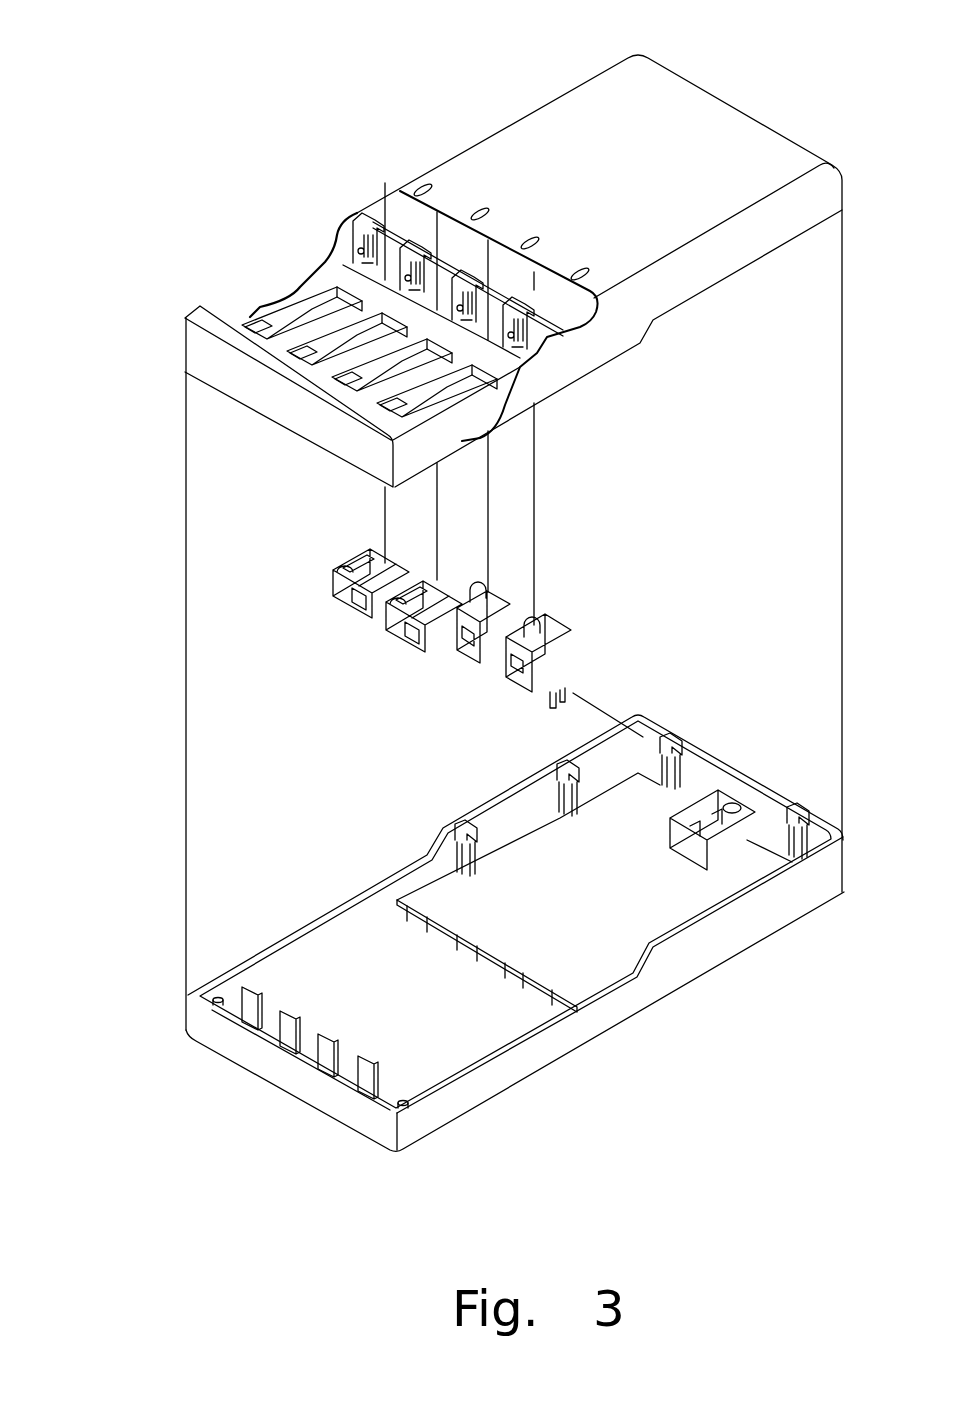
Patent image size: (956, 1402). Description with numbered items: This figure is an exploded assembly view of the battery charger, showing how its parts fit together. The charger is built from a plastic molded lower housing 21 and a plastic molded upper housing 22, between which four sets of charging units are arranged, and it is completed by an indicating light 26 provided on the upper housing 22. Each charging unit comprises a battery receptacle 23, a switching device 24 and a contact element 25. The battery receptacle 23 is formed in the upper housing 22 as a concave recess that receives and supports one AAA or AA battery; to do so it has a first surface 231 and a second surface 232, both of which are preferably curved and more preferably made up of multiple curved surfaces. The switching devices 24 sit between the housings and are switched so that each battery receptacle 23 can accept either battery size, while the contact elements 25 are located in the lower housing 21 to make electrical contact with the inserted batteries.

The lower housing 21 is at (454, 962).
The upper housing 22 is at (203, 360).
The battery receptacle 23 is at (342, 342).
The first surface 231 is at (288, 332).
The second surface 232 is at (330, 373).
The switching device 24 is at (345, 580).
The contact element 25 is at (248, 1012).
The indicating light 26 is at (480, 203).